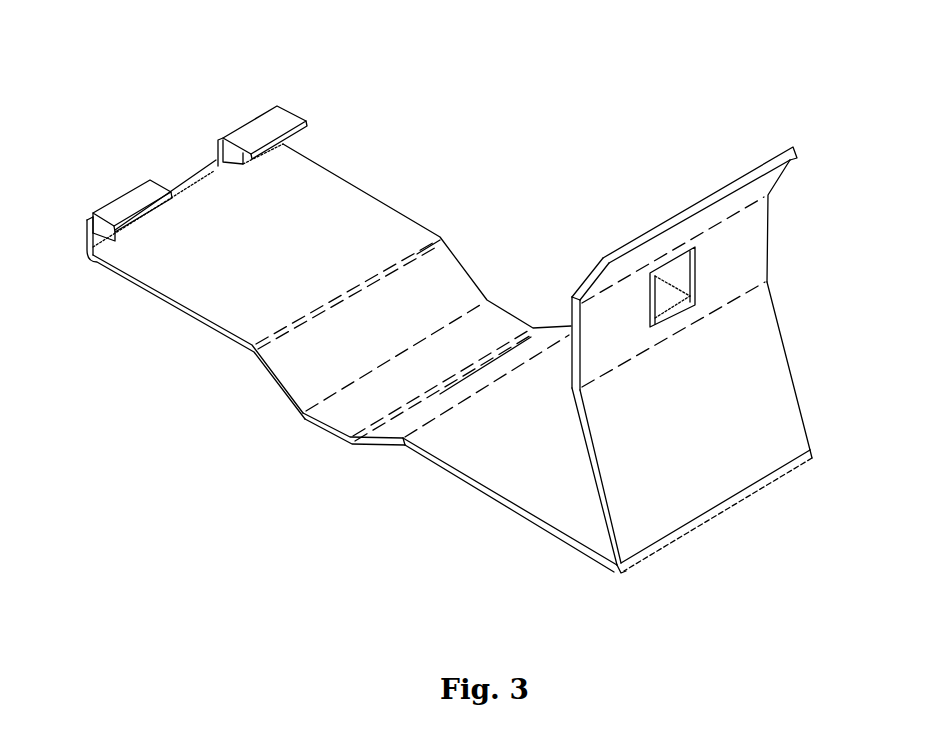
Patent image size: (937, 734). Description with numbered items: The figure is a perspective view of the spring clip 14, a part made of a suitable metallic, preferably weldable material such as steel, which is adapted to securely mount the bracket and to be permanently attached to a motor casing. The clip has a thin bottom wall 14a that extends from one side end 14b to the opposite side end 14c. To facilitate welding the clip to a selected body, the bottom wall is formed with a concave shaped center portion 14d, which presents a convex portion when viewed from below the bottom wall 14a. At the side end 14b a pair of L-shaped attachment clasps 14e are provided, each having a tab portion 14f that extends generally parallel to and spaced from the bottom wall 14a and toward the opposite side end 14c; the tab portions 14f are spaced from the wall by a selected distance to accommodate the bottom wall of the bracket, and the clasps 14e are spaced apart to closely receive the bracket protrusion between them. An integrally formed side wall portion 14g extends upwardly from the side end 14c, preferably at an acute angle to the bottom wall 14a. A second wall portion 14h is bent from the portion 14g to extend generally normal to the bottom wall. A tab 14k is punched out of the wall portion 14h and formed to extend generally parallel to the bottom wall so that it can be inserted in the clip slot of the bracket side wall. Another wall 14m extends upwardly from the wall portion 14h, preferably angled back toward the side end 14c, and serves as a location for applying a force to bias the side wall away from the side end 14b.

The clip 14 is at (489, 100).
The bottom wall 14a is at (500, 443).
The side end 14b is at (173, 267).
The opposite side end 14c is at (580, 517).
The concave shaped center portion 14d is at (350, 423).
The L-shaped attachment clasps 14e is at (86, 240).
The tab portion 14f is at (130, 206).
The side wall portion 14g is at (762, 328).
The second wall portion 14h is at (745, 243).
The tab 14k is at (658, 295).
The wall 14m is at (690, 205).